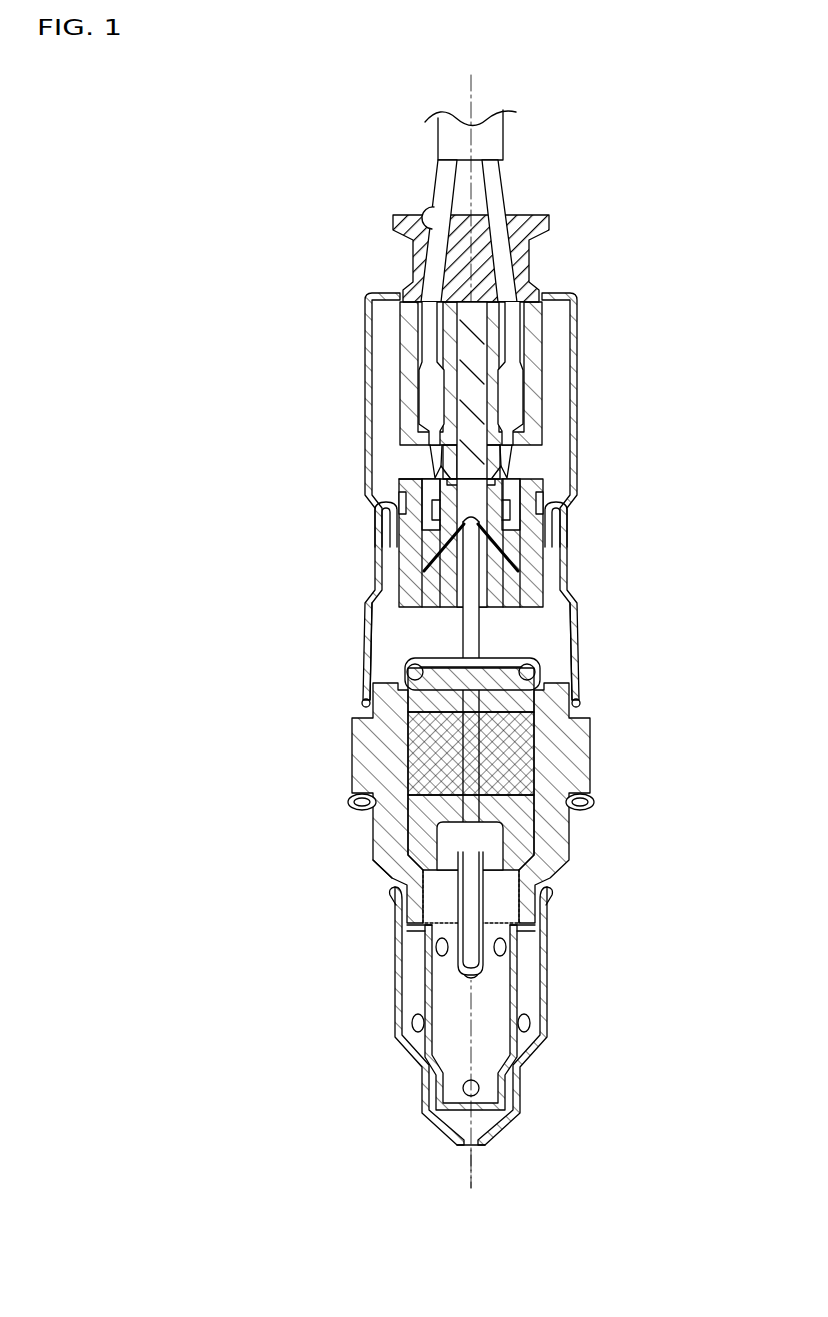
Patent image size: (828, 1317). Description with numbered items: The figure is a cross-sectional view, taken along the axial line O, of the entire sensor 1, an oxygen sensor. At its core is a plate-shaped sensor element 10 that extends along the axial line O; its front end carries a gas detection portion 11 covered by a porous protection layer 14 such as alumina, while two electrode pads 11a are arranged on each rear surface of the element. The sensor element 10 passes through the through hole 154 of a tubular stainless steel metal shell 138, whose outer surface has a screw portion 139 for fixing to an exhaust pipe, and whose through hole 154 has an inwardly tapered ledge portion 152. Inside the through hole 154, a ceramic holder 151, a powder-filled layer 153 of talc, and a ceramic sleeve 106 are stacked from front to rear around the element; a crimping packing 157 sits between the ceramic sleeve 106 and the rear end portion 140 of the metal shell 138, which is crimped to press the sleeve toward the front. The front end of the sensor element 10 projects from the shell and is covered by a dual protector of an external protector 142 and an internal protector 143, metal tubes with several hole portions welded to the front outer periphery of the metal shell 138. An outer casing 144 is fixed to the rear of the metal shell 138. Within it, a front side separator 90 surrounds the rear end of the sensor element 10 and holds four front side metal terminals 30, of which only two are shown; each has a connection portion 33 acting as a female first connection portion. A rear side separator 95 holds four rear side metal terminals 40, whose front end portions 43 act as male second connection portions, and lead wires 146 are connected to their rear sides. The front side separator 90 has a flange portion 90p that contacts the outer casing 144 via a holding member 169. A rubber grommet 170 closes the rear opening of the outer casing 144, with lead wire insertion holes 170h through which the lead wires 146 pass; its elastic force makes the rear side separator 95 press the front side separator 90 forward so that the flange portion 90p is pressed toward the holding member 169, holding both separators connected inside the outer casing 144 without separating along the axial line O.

The sensor 1 is at (653, 135).
The lead wires 146 is at (443, 197).
The lead wire insertion holes 170h is at (432, 208).
The grommet 170 is at (412, 252).
The rear side separator 95 is at (532, 390).
The rear side metal terminal 40 is at (424, 446).
The second connection portion (front end portion) 43 is at (500, 463).
The first connection portion (connection portion) 33 is at (423, 463).
The holding member 169 is at (548, 502).
The flange portion 90p is at (392, 490).
The electrode pad 11a is at (484, 528).
The front side separator 90 is at (410, 548).
The outer casing 144 is at (565, 559).
The front side metal terminal 30 is at (427, 590).
The rear end portion of the metal shell 140 is at (572, 655).
The sensor element 10 is at (458, 634).
The crimping packing 157 is at (535, 667).
The ceramic sleeve 106 is at (568, 687).
The metal shell 138 is at (372, 757).
The powder-filled layer (talc ring) 153 is at (522, 761).
The screw portion 139 is at (383, 833).
The ceramic holder 151 is at (519, 834).
The ledge portion 152 is at (405, 869).
The through hole 154 is at (506, 890).
The gas detection portion 11 is at (473, 930).
The porous protection layer 14 is at (480, 975).
The external protector 142 is at (398, 1043).
The internal protector 143 is at (430, 1058).
The axial line o is at (472, 1170).